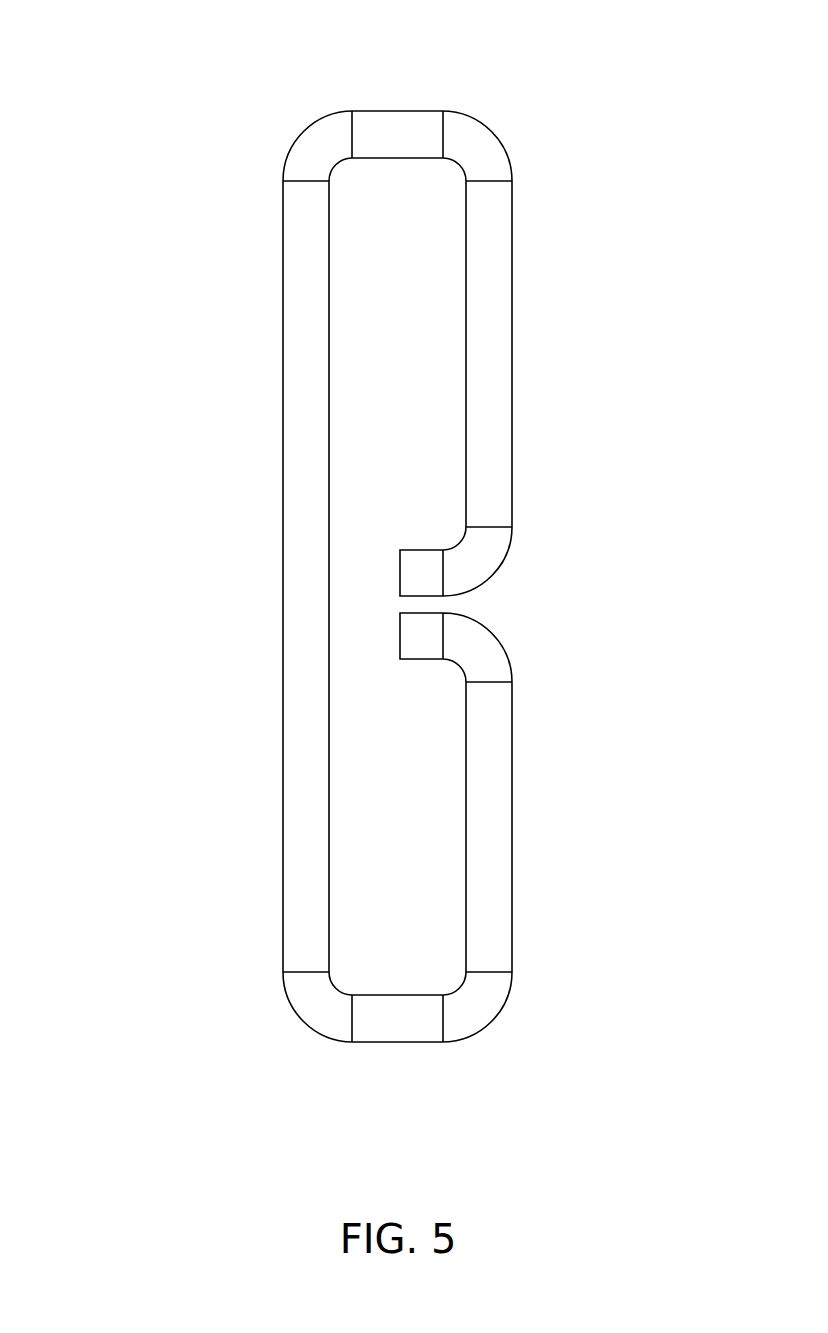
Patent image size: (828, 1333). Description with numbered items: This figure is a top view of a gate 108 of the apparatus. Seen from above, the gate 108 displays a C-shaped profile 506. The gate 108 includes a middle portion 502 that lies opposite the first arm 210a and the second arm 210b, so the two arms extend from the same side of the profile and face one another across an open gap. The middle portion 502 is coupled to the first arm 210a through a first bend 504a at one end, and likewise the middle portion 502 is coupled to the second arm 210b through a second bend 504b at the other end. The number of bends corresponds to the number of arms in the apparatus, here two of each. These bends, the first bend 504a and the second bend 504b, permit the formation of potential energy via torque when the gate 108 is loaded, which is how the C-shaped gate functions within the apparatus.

The gate 108 is at (223, 150).
The C-shaped profile 506 is at (213, 318).
The first bend 504a is at (403, 130).
The second bend 504b is at (407, 1023).
The middle portion 502 is at (300, 483).
The first arm 210a is at (495, 335).
The second arm 210b is at (497, 882).